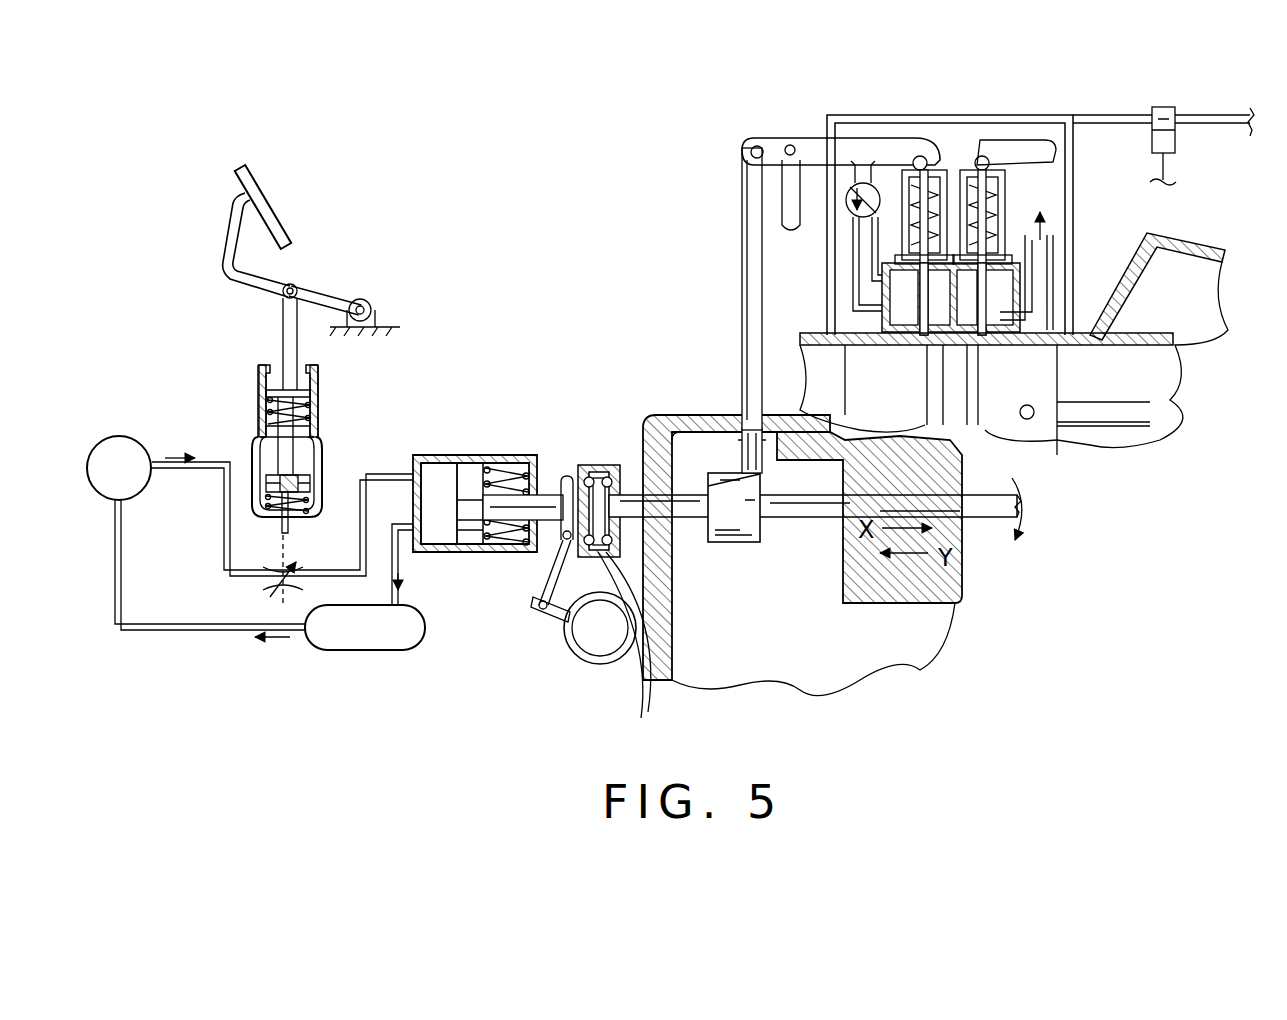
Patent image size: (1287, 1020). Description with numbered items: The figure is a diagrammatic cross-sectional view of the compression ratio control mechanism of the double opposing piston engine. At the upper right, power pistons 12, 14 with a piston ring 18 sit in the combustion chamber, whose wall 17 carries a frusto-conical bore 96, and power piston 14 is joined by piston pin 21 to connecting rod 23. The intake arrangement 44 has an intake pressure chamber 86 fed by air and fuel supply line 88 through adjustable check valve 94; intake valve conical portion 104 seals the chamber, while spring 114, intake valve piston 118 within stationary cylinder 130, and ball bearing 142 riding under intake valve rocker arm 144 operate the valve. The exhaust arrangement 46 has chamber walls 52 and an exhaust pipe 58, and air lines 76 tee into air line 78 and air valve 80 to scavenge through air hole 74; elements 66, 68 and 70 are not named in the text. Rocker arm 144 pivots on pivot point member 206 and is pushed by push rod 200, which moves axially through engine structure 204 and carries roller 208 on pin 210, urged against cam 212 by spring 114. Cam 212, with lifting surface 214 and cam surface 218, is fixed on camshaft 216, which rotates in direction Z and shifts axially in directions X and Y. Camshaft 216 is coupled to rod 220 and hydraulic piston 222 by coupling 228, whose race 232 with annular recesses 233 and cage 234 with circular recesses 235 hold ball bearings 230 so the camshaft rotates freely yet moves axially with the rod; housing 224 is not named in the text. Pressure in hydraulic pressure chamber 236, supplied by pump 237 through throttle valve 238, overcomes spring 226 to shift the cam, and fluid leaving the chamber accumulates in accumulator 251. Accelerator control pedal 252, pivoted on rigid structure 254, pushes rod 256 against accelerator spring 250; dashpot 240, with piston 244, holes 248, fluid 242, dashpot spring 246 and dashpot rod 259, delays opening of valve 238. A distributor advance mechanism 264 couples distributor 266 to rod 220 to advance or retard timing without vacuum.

The power piston 12 is at (918, 390).
The power piston 14 is at (1048, 390).
The combustion chamber wall 17 is at (1150, 335).
The piston ring 18 is at (945, 426).
The piston pin 21 is at (1027, 420).
The connecting rod 23 is at (1140, 410).
The intake arrangement 44 is at (888, 258).
The exhaust arrangement 46 is at (1015, 258).
The exhaust chamber wall 52 is at (1058, 372).
The exhaust pipe 58 is at (1053, 245).
The arm 66 is at (1032, 148).
The pipe 68 is at (1050, 240).
The spring 70 is at (992, 220).
The air hole 74 is at (1072, 345).
The air line 76 is at (962, 115).
The air line 78 is at (1115, 118).
The air valve 80 is at (1175, 137).
The intake pressure chamber 86 is at (903, 300).
The intake air and fuel supply line 88 is at (855, 232).
The adjustable check valve 94 is at (845, 200).
The frusto-conical bore 96 is at (915, 338).
The intake valve conical portion 104 is at (893, 380).
The spring 114 is at (944, 170).
The intake valve piston 118 is at (984, 170).
The stationary cylinder 130 is at (925, 160).
The ball bearing 142 is at (905, 172).
The intake valve rocker arm 144 is at (815, 148).
The push rod 200 is at (752, 238).
The engine structure 204 is at (702, 410).
The pivot point member 206 is at (783, 182).
The roller 208 is at (745, 450).
The pin 210 is at (776, 458).
The cam 212 is at (722, 542).
The lifting surface 214 is at (748, 542).
The camshaft 216 is at (815, 515).
The cam surface 218 is at (738, 550).
The rod 220 is at (505, 468).
The hydraulic piston 222 is at (467, 470).
The cylinder housing 224 is at (437, 455).
The spring 226 is at (500, 530).
The coupling 228 is at (635, 412).
The ball bearings 230 is at (605, 475).
The race 232 is at (597, 505).
The annular recesses 233 is at (683, 508).
The cage 234 is at (548, 608).
The circular recesses 235 is at (615, 478).
The hydraulic pressure chamber 236 is at (437, 535).
The pump 237 is at (101, 436).
The throttle valve 238 is at (256, 415).
The dashpot 240 is at (315, 445).
The fluid 242 is at (306, 466).
The piston 244 is at (268, 477).
The dashpot spring 246 is at (260, 502).
The holes 248 is at (267, 485).
The accelerator spring 250 is at (313, 398).
The accumulator 251 is at (352, 650).
The accelerator control pedal 252 is at (253, 197).
The rigid structure 254 is at (392, 327).
The rod 256 is at (287, 313).
The dashpot rod 259 is at (290, 530).
The distributor advance mechanism 264 is at (518, 658).
The distributor 266 is at (538, 605).